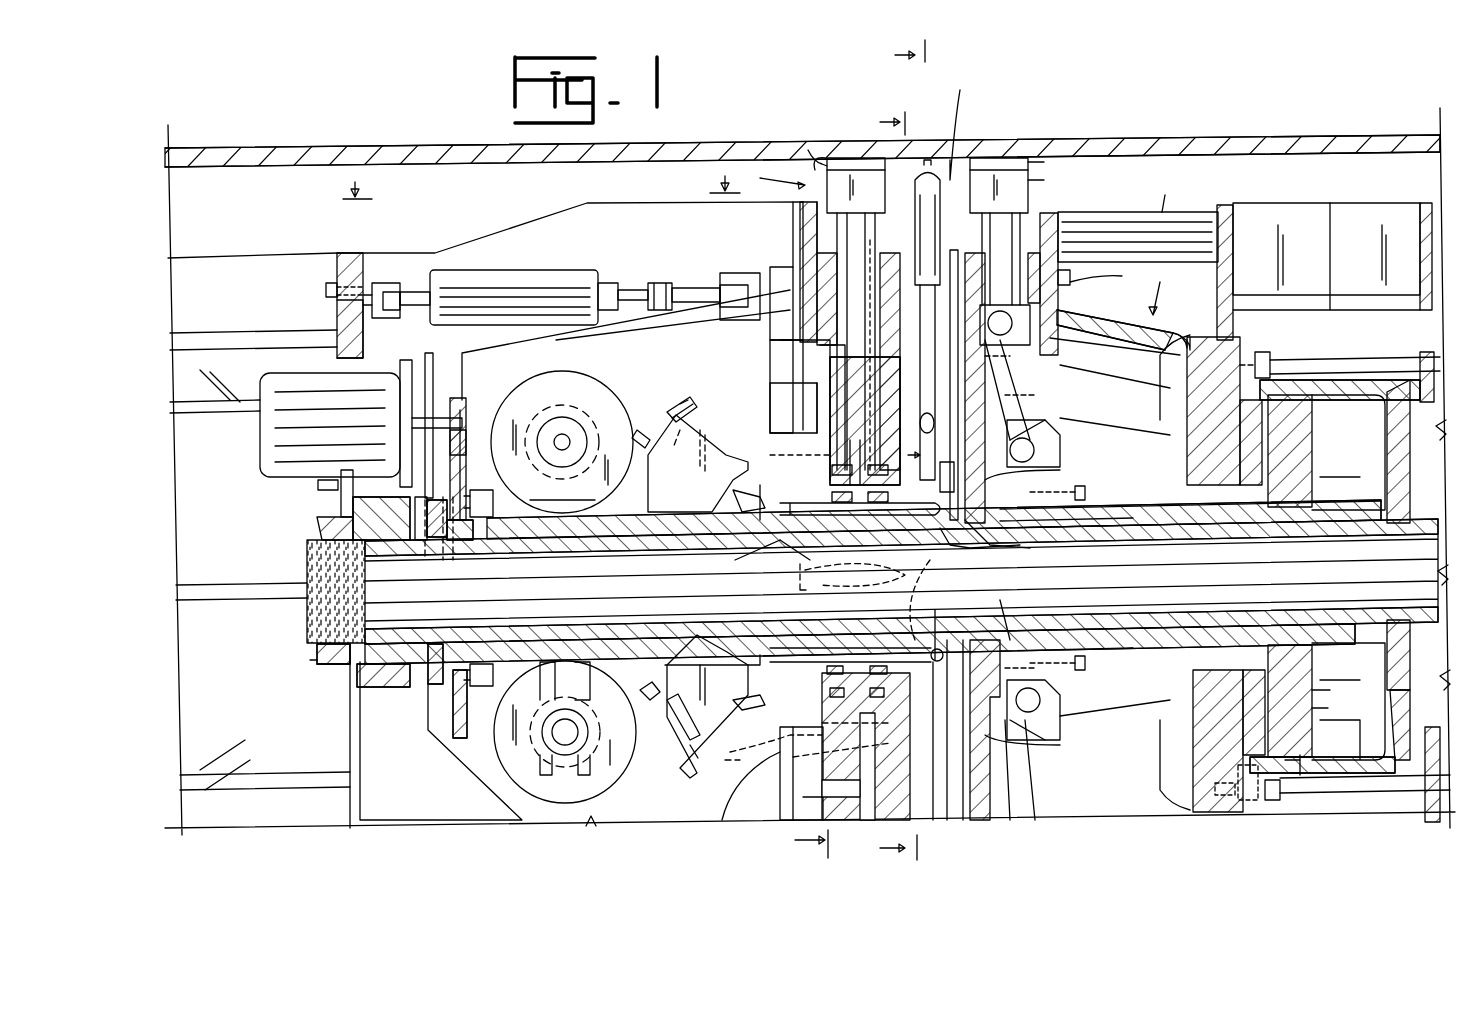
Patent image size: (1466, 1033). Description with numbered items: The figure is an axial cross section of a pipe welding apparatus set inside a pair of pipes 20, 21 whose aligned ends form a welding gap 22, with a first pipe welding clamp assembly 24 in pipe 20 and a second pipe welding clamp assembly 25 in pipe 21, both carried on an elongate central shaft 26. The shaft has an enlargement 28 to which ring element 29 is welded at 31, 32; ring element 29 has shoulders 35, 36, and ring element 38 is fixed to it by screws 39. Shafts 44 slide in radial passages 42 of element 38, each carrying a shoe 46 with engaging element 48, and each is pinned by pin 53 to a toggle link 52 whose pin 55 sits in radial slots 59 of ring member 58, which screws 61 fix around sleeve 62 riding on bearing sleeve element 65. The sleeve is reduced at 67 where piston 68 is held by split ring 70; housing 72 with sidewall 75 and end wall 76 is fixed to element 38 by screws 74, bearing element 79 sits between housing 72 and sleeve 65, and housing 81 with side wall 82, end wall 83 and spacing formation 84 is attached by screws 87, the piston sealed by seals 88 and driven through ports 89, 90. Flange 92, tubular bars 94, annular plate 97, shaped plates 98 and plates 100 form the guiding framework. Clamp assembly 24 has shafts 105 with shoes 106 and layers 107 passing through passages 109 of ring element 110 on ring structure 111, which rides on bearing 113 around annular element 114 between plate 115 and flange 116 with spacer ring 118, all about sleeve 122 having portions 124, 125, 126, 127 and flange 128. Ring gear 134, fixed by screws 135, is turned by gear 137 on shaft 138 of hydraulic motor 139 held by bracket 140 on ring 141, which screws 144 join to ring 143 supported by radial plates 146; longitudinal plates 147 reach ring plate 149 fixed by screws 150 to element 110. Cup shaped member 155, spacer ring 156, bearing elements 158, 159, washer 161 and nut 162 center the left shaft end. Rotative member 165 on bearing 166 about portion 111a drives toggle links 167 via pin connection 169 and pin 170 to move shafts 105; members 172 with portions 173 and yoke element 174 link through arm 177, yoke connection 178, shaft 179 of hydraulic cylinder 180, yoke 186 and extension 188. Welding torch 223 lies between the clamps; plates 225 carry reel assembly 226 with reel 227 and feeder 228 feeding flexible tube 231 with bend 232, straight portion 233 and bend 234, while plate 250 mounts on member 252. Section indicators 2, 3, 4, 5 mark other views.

The pipe 20 is at (412, 148).
The pipe 21 is at (1138, 136).
The welding gap 22 is at (928, 160).
The first pipe welding clamp assembly 24 is at (850, 128).
The second pipe welding clamp assembly 25 is at (997, 128).
The central shaft 26 is at (305, 560).
The enlargement 28 is at (1086, 464).
The ring element 29 is at (1018, 400).
The weld 31 is at (985, 546).
The weld 32 is at (1035, 552).
The shoulder 35 is at (1065, 398).
The shoulder 36 is at (1040, 357).
The ring element 38 is at (968, 253).
The screws 39 is at (1005, 331).
The radial cylindrical passages 42 is at (1070, 270).
The shaft 44 is at (1050, 208).
The pipe wall engaging shoe 46 is at (1048, 178).
The pipe wall engaging element 48 is at (1048, 160).
The toggle link 52 is at (1030, 404).
The pin 53 is at (1075, 312).
The pin 55 is at (1063, 427).
The ring member 58 is at (1035, 450).
The radial slots 59 is at (1062, 470).
The screws 61 is at (1085, 494).
The sleeve 62 is at (1148, 500).
The bearing sleeve element 65 is at (1110, 530).
The reduced portion 67 is at (1329, 682).
The piston 68 is at (1329, 702).
The split ring 70 is at (1305, 652).
The housing 72 is at (1161, 288).
The screws 74 is at (1108, 272).
The conically tapered sidewall 75 is at (1153, 330).
The end wall 76 is at (1187, 421).
The bearing element 79 is at (1300, 444).
The housing 81 is at (1355, 368).
The annular side wall 82 is at (1330, 773).
The end wall 83 is at (1410, 658).
The annular spacing formation 84 is at (1370, 424).
The screws 87 is at (1265, 352).
The seals 88 is at (1300, 790).
The port 89 is at (1240, 790).
The port 90 is at (1410, 705).
The annular ring flange 92 is at (1063, 224).
The cylindrical tubular bars 94 is at (1163, 194).
The annular plate 97 is at (1222, 205).
The shaped plates 98 is at (1326, 203).
The plates 100 is at (1420, 218).
The cylindrical shafts 105 is at (806, 222).
The pipe engaging shoe 106 is at (810, 150).
The pipe engaging layer 107 is at (822, 140).
The radial passages 109 is at (817, 262).
The ring element 110 is at (768, 354).
The ring structure 111 is at (830, 386).
The portion of member 111 111a is at (789, 450).
The circular bearing 113 is at (835, 488).
The annular element 114 is at (872, 497).
The ring shaped plate 115 is at (795, 540).
The peripheral flange 116 is at (900, 476).
The spacer ring 118 is at (832, 470).
The sleeve 122 is at (660, 517).
The cylindrical portion 124 is at (430, 684).
The cylindrical portion 125 is at (800, 665).
The square cross section portion 126 is at (670, 665).
The square cross section portion 127 is at (955, 608).
The flange portion 128 is at (440, 698).
The ring gear 134 is at (474, 438).
The screws 135 is at (490, 490).
The gear 137 is at (466, 405).
The shaft 138 is at (428, 380).
The hydraulic motor 139 is at (260, 435).
The releasable bracket 140 is at (330, 363).
The annular ring member 141 is at (337, 312).
The ring 143 is at (360, 255).
The screws 144 is at (326, 286).
The radially disposed plates 146 is at (470, 384).
The longitudinal plates 147 is at (540, 218).
The annular ring plate 149 is at (806, 193).
The screws 150 is at (792, 358).
The cup shaped member 155 is at (340, 495).
The spacer ring 156 is at (430, 552).
The bearing element 158 is at (345, 687).
The bearing element 159 is at (370, 688).
The washer 161 is at (317, 652).
The nut 162 is at (317, 664).
The rotative ring shaped member 165 is at (822, 455).
The bearing 166 is at (822, 718).
The toggle link 167 is at (793, 408).
The pin connection 169 is at (870, 240).
The pin 170 is at (728, 782).
The member 172 is at (770, 402).
The narrowed outwardly extending portion 173 is at (768, 345).
The yoke element 174 is at (748, 273).
The arm 177 is at (693, 288).
The yoke connection 178 is at (660, 283).
The shaft 179 is at (608, 283).
The hydraulic cylinder 180 is at (518, 258).
The yoke element 186 is at (384, 283).
The extension 188 is at (418, 292).
The welding torch 223 is at (946, 124).
The flat plate 225 is at (650, 499).
The welding electrode wire reel supporting assembly 226 is at (598, 499).
The reel 227 is at (595, 385).
The welding electrode wire feeder device 228 is at (715, 448).
The flexible tube 231 is at (955, 852).
The small bend 232 is at (740, 555).
The straight portion 233 is at (798, 580).
The ninety degree bend 234 is at (960, 590).
The flat plate 250 is at (954, 250).
The member 252 is at (1015, 610).
The section line 2 is at (891, 486).
The section line 3 is at (785, 512).
The section line 4 is at (541, 177).
The section line 5 is at (901, 253).